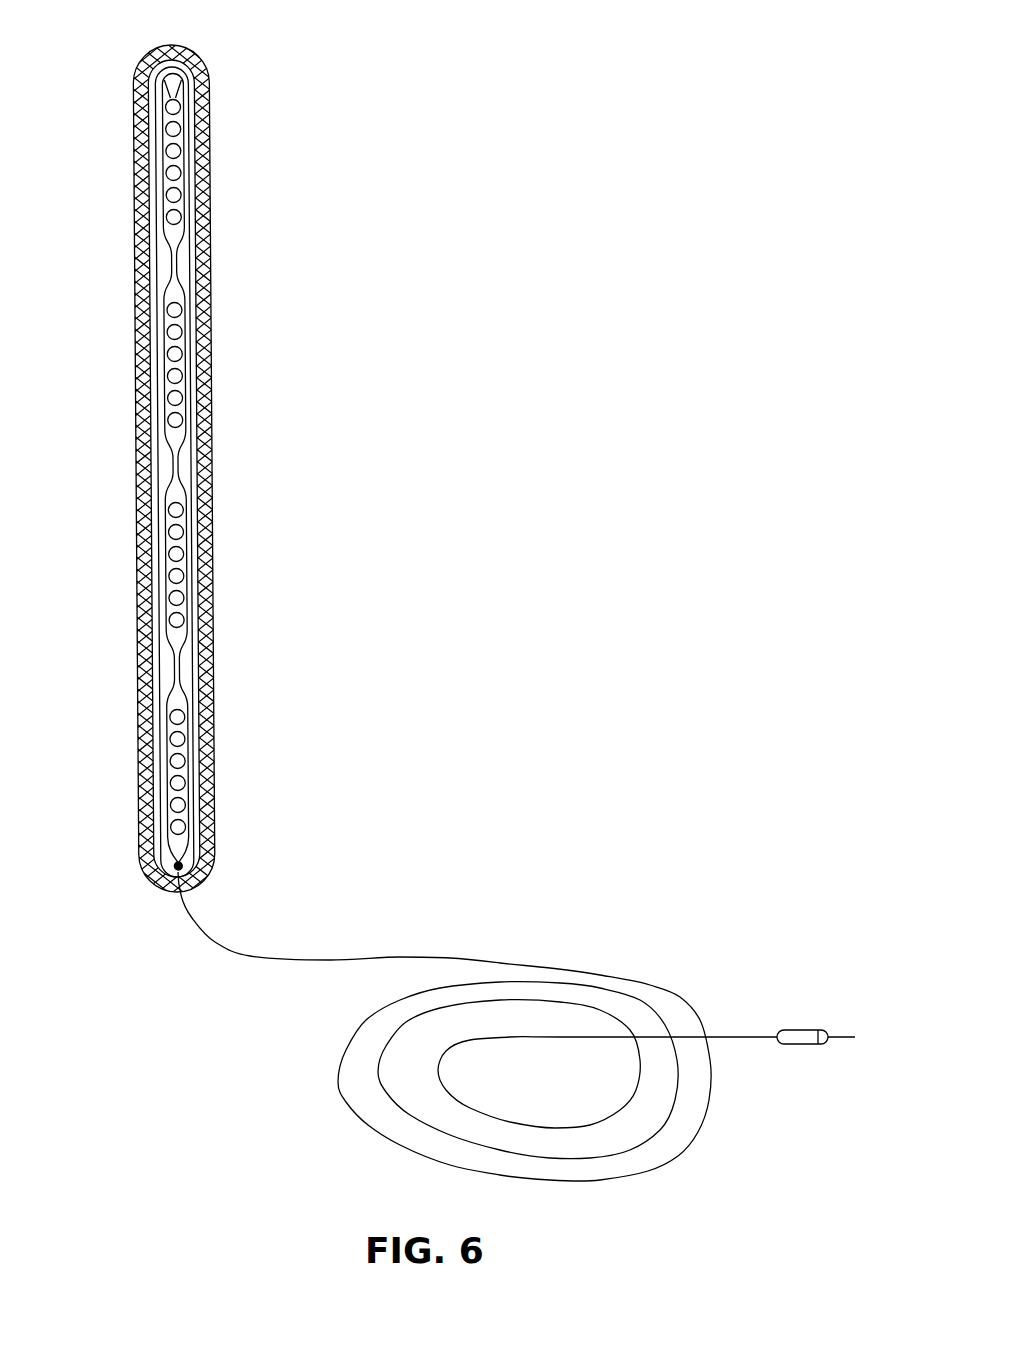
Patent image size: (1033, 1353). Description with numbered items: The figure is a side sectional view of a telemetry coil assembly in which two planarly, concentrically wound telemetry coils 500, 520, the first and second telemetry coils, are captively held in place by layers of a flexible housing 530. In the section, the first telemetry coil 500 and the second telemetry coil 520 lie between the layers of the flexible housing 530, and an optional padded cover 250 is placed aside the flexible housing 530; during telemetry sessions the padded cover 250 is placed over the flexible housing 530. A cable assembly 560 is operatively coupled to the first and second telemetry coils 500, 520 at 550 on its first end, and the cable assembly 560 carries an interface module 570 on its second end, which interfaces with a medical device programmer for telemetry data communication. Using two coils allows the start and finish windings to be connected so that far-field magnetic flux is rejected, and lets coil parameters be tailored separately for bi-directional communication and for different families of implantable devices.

The padded cover 250 is at (208, 470).
The first telemetry coil 500 is at (178, 163).
The second telemetry coil 520 is at (177, 340).
The flexible housing 530 is at (168, 462).
The coupling point of cable assembly to telemetry coils 550 is at (183, 858).
The cable assembly 560 is at (524, 943).
The interface module 570 is at (800, 1028).